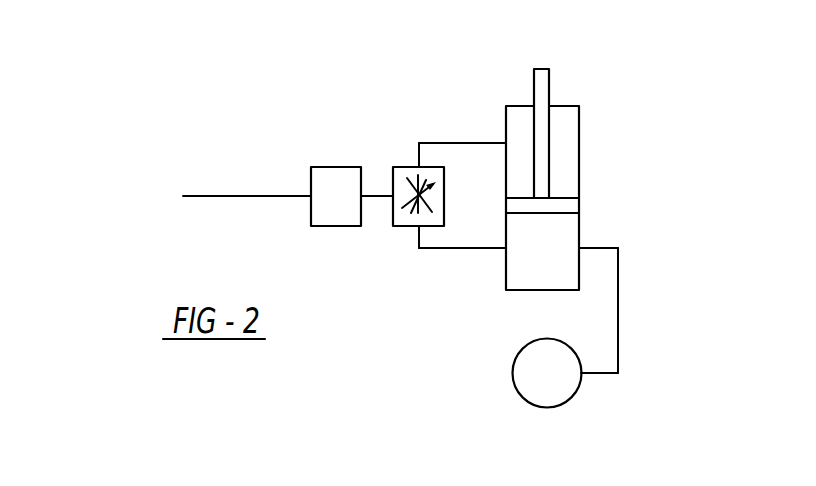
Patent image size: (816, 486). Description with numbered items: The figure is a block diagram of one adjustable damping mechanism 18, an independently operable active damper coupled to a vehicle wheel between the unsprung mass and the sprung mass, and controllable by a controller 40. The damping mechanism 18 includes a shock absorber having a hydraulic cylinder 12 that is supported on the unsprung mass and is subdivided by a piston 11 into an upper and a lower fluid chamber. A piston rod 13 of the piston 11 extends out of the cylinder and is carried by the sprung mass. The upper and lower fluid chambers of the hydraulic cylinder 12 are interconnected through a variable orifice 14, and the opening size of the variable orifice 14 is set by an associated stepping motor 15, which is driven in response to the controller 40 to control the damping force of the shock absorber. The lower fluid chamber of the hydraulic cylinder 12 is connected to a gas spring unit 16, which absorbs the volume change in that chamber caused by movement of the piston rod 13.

The piston 11 is at (563, 203).
The hydraulic cylinder 12 is at (579, 131).
The piston rod 13 is at (534, 87).
The variable orifice 14 is at (406, 167).
The stepping motor 15 is at (320, 167).
The gas spring unit 16 is at (568, 400).
The damping mechanism 18 is at (480, 324).
The controller 40 is at (186, 196).